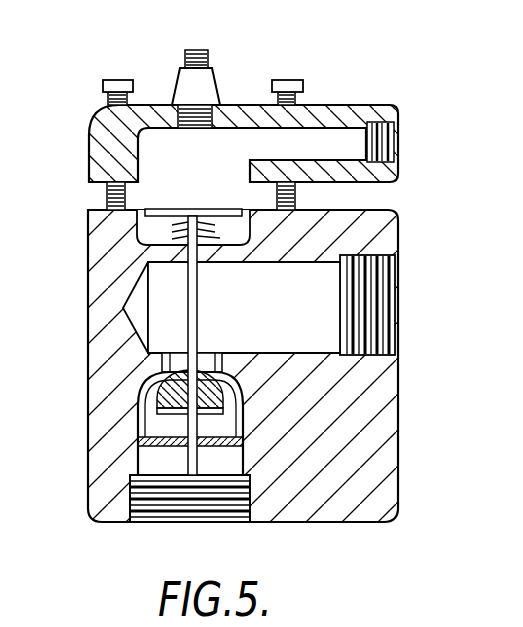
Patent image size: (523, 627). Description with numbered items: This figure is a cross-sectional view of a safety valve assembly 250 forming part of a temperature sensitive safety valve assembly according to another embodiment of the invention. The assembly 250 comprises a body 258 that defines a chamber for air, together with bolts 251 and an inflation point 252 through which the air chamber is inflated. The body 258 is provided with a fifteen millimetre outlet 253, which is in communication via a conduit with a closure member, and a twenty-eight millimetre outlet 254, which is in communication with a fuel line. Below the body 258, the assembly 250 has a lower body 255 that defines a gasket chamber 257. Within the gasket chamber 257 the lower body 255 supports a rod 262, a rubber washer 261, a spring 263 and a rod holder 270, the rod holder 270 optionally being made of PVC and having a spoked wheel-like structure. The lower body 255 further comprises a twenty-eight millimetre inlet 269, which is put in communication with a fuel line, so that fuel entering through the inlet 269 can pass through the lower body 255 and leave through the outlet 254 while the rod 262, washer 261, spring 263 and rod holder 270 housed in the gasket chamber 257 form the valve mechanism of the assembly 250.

The safety valve assembly 250 is at (404, 394).
The bolts 251 is at (121, 80).
The inflation point 252 is at (220, 82).
The 15 mm outlet 253 is at (398, 130).
The 28 mm outlet 254 is at (400, 270).
The lower body 255 is at (82, 326).
The gasket chamber 257 is at (100, 247).
The body 258 is at (86, 112).
The rubber washer 261 is at (205, 352).
The rod 262 is at (203, 297).
The spring 263 is at (220, 238).
The 28 mm inlet 269 is at (145, 527).
The rod holder 270 is at (223, 446).